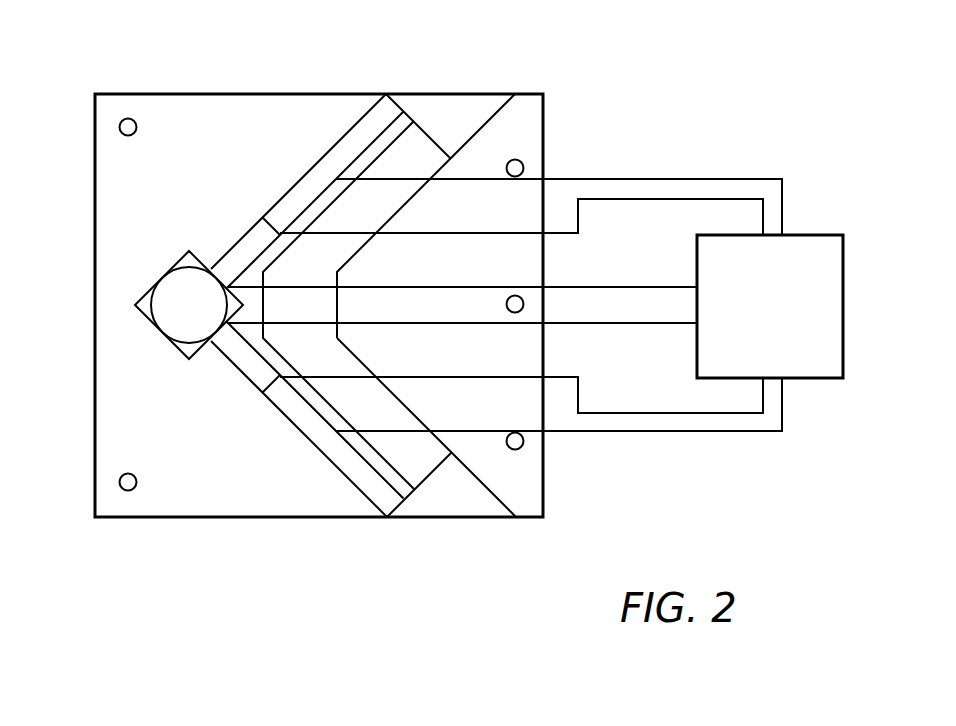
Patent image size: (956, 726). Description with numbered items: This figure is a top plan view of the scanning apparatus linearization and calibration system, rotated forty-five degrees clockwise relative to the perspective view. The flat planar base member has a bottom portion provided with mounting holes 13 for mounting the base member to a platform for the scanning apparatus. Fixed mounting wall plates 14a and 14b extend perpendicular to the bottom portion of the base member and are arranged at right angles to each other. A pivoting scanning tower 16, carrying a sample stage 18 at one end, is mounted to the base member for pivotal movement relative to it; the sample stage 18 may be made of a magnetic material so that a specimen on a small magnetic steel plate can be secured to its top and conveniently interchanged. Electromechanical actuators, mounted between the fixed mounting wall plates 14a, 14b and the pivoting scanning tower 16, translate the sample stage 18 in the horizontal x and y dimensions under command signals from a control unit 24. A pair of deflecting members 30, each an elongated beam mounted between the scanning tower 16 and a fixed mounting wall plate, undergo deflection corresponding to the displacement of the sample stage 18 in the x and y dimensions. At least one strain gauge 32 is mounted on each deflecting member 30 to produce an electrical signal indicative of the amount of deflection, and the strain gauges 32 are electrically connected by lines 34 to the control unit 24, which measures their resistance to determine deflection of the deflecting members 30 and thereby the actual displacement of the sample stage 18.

The mounting holes 13 is at (120, 123).
The fixed mounting wall plate 14a is at (466, 494).
The fixed mounting wall plate 14b is at (470, 118).
The pivoting scanning tower 16 is at (143, 312).
The sample stage 18 is at (175, 284).
The control unit 24 is at (813, 235).
The deflecting members 30 is at (258, 232).
The strain gauge 32 is at (317, 179).
The lines 34 is at (631, 199).